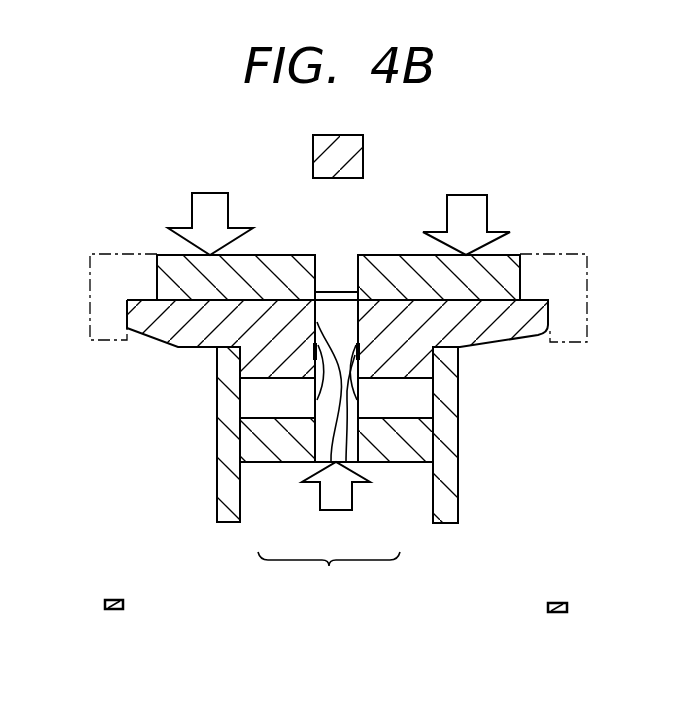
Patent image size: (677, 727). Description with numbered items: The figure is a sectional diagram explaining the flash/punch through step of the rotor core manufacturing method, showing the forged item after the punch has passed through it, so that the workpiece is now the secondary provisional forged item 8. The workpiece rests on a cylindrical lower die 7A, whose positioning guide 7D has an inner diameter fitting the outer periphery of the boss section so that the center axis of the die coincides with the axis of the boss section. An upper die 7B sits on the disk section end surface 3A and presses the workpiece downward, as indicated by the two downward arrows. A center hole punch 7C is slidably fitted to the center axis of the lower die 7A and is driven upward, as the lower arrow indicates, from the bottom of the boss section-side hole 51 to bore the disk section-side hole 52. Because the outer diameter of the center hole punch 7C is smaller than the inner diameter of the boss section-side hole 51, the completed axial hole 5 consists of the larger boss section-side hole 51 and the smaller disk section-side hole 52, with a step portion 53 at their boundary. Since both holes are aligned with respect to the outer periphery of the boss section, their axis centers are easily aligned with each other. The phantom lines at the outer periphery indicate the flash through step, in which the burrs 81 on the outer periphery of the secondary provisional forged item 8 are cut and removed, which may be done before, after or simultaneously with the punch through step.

The disk section end surface 3A is at (281, 298).
The upper die 7B is at (522, 256).
The secondary provisional forged item 8 is at (549, 301).
The center hole punch 7C is at (352, 397).
The lower die 7A is at (460, 433).
The positioning guide 7D is at (217, 435).
The axial hole 5 is at (329, 575).
The boss section-side hole 51 is at (318, 367).
The disk section-side hole 52 is at (333, 462).
The step portion 53 is at (357, 370).
The burrs 81 is at (110, 610).